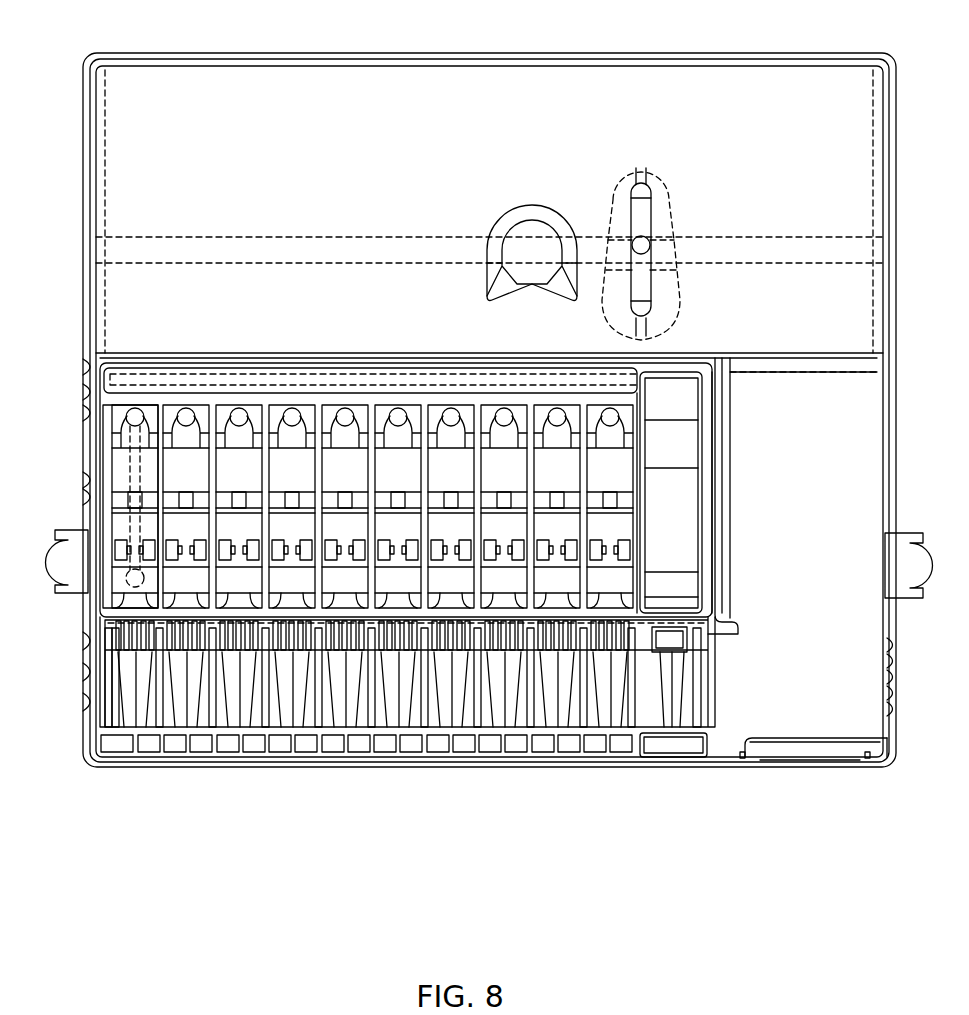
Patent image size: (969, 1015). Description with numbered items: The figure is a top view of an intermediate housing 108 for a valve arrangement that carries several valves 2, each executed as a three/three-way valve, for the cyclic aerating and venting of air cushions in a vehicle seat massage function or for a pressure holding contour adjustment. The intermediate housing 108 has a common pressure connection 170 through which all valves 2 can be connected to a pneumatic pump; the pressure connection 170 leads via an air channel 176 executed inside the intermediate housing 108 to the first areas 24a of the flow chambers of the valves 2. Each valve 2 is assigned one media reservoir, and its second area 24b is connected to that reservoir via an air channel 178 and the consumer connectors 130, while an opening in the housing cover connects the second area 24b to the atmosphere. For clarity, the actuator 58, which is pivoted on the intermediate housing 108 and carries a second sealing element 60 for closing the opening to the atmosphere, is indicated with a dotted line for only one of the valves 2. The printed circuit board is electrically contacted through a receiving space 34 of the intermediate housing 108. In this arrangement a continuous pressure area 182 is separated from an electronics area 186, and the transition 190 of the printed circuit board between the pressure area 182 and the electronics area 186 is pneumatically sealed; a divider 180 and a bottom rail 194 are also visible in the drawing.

The valve 2 is at (186, 408).
The first area of the flow chamber 24a is at (118, 378).
The second area of the flow chamber 24b is at (453, 448).
The receiving space 34 is at (807, 722).
The actuator 58 is at (118, 470).
The second sealing element 60 is at (130, 578).
The intermediate housing 108 is at (765, 112).
The consumer connectors 130 is at (283, 700).
The pressure connection 170 is at (668, 690).
The air channel 176 is at (683, 522).
The air channel 178 is at (232, 568).
The divider wall 180 is at (707, 448).
The pressure area 182 is at (80, 873).
The electronics area 186 is at (895, 873).
The transition of the printed circuit board 190 is at (641, 225).
The bottom rail 194 is at (118, 745).